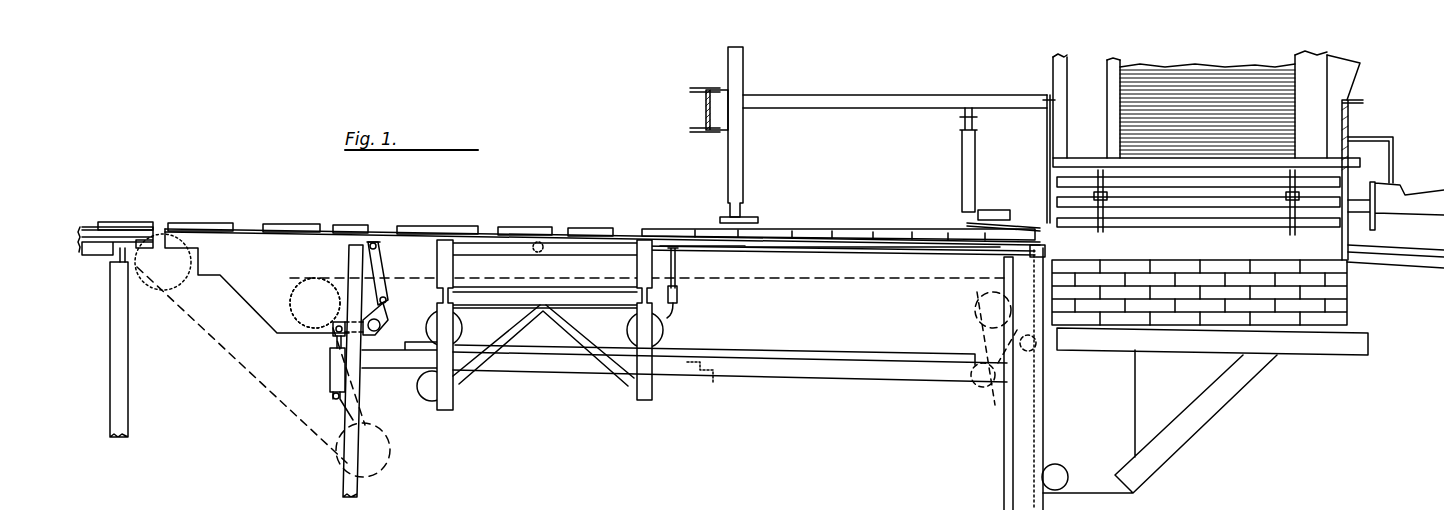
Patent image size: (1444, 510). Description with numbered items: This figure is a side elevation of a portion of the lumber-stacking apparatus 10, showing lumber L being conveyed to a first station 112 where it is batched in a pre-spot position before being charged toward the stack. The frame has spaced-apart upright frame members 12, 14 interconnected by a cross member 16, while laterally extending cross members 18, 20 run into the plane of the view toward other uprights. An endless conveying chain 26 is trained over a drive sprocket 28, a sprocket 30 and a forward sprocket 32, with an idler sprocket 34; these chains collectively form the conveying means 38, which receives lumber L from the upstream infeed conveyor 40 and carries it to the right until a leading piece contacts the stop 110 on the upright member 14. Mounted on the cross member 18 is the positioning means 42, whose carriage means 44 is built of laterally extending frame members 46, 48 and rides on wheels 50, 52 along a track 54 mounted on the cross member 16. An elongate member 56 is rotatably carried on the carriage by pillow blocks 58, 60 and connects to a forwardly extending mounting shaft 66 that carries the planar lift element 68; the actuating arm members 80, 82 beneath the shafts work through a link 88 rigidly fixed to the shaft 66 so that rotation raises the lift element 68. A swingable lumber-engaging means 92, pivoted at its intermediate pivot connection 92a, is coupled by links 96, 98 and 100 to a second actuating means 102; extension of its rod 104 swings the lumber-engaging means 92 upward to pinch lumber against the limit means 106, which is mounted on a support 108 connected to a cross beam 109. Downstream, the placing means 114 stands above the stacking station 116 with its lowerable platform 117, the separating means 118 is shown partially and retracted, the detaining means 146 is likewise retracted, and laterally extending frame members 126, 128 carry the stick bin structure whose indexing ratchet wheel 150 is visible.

The apparatus for forming a lumber stack 10 is at (232, 140).
The upright frame member 12 is at (350, 405).
The upright frame member 14 is at (1012, 415).
The cross member 16 is at (815, 373).
The laterally extending cross member 18 is at (362, 362).
The laterally extending cross member 20 is at (700, 375).
The endless conveying chain 26 is at (255, 378).
The drive sprocket 28 is at (330, 445).
The sprocket 30 is at (242, 281).
The forward sprocket 32 is at (1010, 270).
The idler sprocket 34 is at (315, 289).
The conveying means 38 is at (250, 220).
The infeed conveyor 40 is at (92, 210).
The positioning means 42 is at (672, 337).
The carriage means 44 is at (543, 322).
The laterally extending frame member 46 is at (460, 268).
The laterally extending frame member 48 is at (637, 268).
The wheel 50 is at (458, 326).
The wheel 52 is at (625, 326).
The track 54 is at (847, 345).
The elongate member 56 is at (622, 240).
The pillow block 58 is at (445, 240).
The pillow block 60 is at (647, 248).
The mounting shaft 66 is at (745, 257).
The lift element 68 is at (850, 250).
The arm member 80 is at (688, 303).
The arm member 82 is at (680, 315).
The link 88 is at (688, 273).
The lumber-engaging means 92 is at (393, 232).
The pivot connection 92a is at (552, 269).
The link 96 is at (386, 268).
The link 98 is at (386, 315).
The link 100 is at (315, 303).
The second actuating means 102 is at (330, 373).
The rod 104 is at (330, 335).
The limit means 106 is at (740, 206).
The support 108 is at (742, 152).
The cross beam 109 is at (703, 112).
The stop 110 is at (1047, 250).
The first station 112 is at (877, 225).
The placing means 114 is at (1225, 170).
The stacking station 116 is at (1322, 365).
The platform 117 is at (1365, 345).
The separating means 118 is at (1413, 280).
The laterally extending frame member 126 is at (1048, 136).
The laterally extending frame member 128 is at (1355, 100).
The detaining means 146 is at (1000, 205).
The ratchet wheel 150 is at (1375, 220).
The lumber L is at (615, 228).